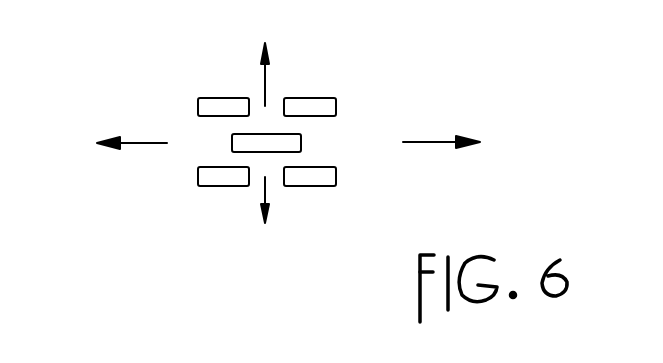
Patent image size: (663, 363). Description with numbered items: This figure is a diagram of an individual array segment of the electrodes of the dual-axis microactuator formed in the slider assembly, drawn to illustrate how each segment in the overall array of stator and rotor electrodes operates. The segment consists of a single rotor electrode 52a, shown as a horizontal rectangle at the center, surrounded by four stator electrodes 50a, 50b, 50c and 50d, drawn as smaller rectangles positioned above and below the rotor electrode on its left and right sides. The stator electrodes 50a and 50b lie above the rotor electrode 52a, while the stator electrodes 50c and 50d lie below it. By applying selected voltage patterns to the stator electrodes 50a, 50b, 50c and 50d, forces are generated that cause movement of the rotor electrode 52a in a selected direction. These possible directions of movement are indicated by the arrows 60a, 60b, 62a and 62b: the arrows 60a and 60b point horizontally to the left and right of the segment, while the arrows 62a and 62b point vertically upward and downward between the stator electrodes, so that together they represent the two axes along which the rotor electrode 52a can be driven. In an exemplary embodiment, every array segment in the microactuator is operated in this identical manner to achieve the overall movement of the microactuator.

The stator electrode 50a is at (213, 98).
The stator electrode 50b is at (330, 98).
The stator electrode 50c is at (210, 186).
The stator electrode 50d is at (318, 186).
The rotor electrode 52a is at (301, 142).
The arrow 60a is at (145, 143).
The arrow 60b is at (437, 142).
The arrow 62a is at (266, 72).
The arrow 62b is at (268, 197).